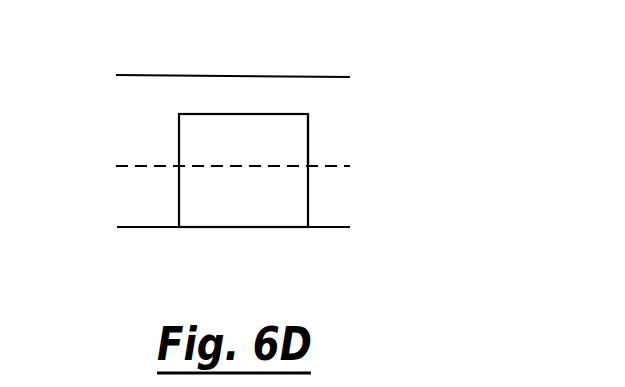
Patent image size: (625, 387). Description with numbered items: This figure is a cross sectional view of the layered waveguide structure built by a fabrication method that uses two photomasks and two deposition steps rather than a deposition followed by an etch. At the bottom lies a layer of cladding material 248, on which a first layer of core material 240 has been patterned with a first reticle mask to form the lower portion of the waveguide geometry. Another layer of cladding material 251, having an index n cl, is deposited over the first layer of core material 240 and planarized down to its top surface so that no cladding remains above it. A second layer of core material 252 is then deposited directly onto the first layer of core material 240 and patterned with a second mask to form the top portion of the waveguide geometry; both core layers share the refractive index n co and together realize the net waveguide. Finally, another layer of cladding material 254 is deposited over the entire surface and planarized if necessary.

The layer of cladding material 254 is at (253, 89).
The second layer of core material 252 is at (298, 137).
The first layer of core material 240 is at (293, 187).
The layer of cladding material 251 is at (333, 218).
The layer of cladding material 248 is at (293, 252).